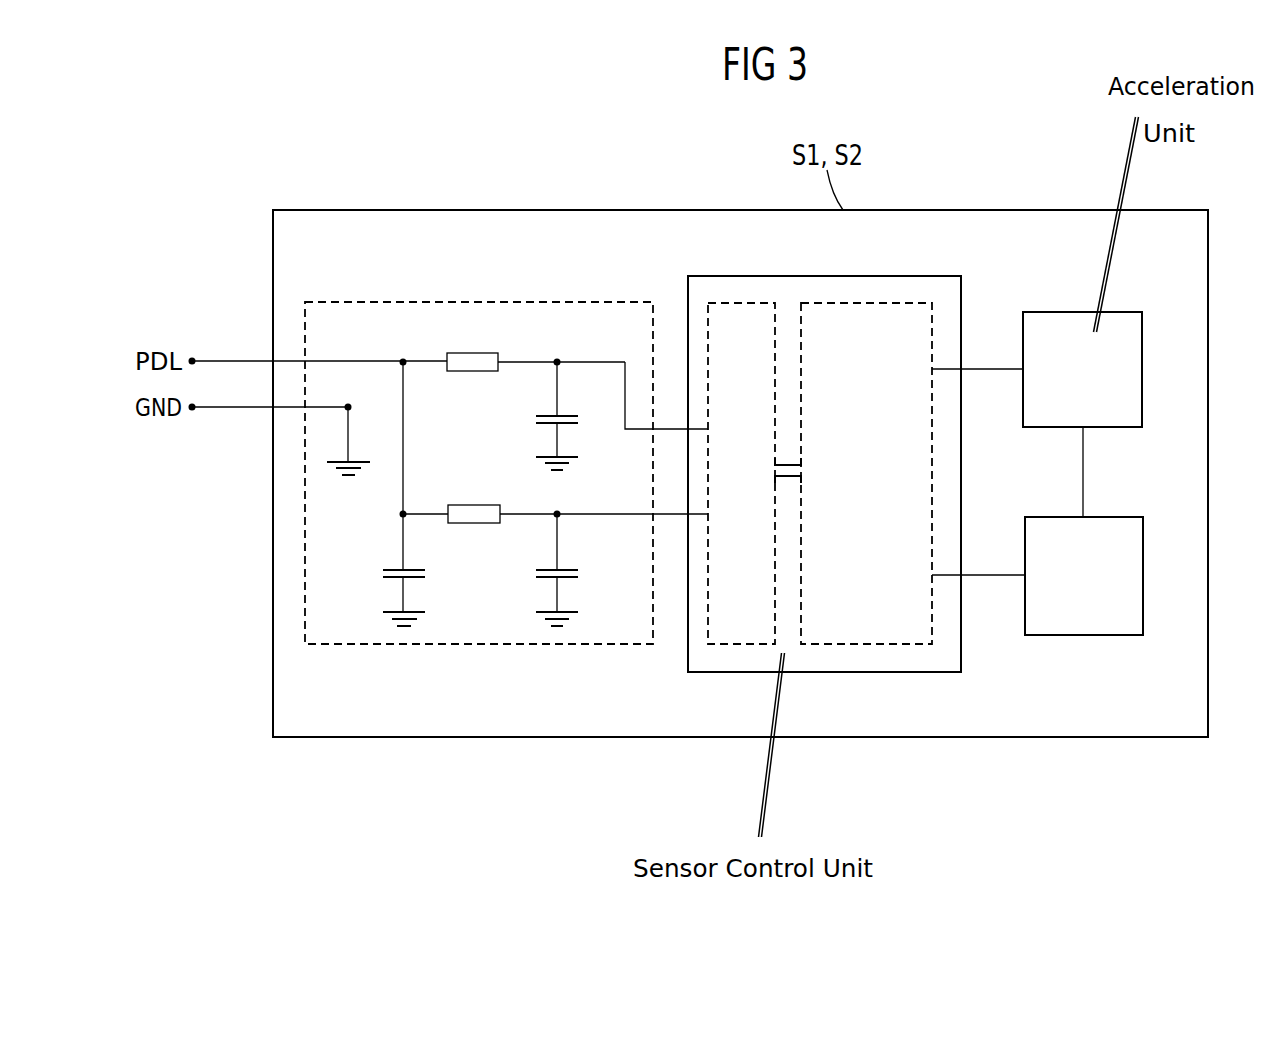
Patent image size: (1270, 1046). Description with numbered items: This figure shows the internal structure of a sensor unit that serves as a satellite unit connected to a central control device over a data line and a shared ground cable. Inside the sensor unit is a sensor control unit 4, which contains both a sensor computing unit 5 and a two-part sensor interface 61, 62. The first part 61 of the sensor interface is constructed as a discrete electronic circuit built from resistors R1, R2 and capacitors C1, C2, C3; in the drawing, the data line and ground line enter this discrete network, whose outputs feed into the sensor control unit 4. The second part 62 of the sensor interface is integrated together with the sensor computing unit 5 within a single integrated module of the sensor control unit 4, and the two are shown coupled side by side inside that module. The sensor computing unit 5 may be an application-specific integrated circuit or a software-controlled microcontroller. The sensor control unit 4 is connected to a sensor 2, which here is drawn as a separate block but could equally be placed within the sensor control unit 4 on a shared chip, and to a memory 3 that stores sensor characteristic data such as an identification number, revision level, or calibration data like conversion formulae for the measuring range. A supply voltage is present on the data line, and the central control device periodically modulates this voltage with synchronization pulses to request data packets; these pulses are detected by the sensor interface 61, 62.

The sensor 2 is at (1080, 311).
The memory 3 is at (1085, 637).
The sensor control unit 4 is at (688, 658).
The sensor computing unit 5 is at (870, 648).
The first part of the sensor interface 61 is at (515, 647).
The second part of the sensor interface 62 is at (740, 648).
The resistor R1 is at (472, 378).
The resistor R2 is at (474, 530).
The capacitor C1 is at (540, 416).
The capacitor C2 is at (423, 570).
The capacitor C3 is at (575, 570).